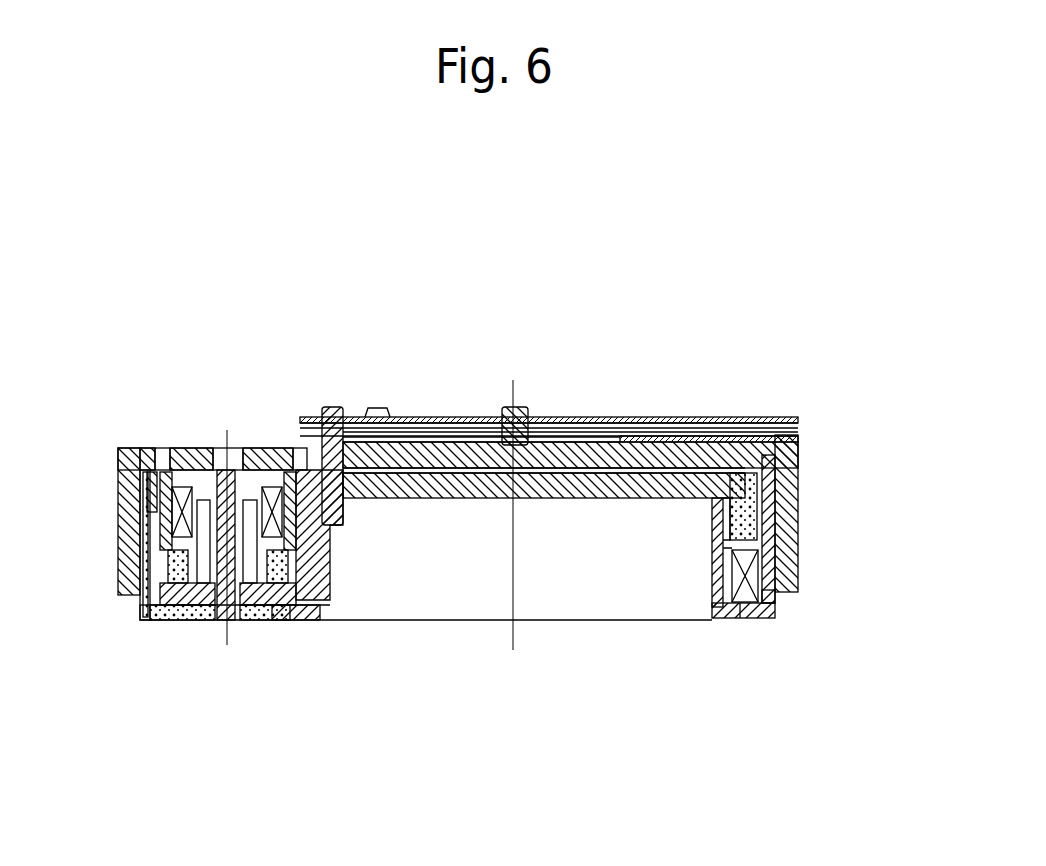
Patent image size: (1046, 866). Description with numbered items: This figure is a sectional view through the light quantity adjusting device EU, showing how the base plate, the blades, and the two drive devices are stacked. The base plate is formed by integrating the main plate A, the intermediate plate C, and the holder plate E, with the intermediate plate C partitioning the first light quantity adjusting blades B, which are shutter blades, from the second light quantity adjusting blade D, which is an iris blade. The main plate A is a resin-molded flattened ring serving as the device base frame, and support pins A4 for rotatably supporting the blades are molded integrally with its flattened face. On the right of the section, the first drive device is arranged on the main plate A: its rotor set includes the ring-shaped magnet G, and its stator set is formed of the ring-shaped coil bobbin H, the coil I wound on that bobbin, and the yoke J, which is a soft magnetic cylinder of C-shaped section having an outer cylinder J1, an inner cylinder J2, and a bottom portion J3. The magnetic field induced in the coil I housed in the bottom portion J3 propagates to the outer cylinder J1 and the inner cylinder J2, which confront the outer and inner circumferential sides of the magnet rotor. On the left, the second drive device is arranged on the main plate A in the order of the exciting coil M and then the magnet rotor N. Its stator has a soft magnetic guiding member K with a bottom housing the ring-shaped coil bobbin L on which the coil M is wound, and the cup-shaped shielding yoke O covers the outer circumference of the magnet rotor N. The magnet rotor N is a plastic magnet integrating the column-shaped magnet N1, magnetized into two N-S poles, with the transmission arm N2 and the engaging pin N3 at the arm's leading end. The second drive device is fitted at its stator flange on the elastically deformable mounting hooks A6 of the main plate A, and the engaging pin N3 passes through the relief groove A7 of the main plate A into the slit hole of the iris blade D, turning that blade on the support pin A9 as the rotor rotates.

The light quantity adjusting device EU is at (720, 347).
The main plate A is at (802, 465).
The first light quantity adjusting blades B is at (443, 420).
The intermediate plate C is at (803, 420).
The second light quantity adjusting blade D is at (570, 425).
The holder plate E is at (728, 417).
The magnet G is at (745, 512).
The coil bobbin H is at (745, 565).
The coil I is at (773, 573).
The yoke J is at (737, 622).
The outer cylinder J1 is at (777, 597).
The inner cylinder J2 is at (703, 603).
The bottom portion J3 is at (752, 620).
The guiding member K is at (183, 450).
The coil bobbin L is at (163, 543).
The coil M is at (118, 535).
The magnet rotor N is at (340, 552).
The magnet N1 is at (188, 625).
The transmission arm N2 is at (338, 585).
The engaging pin N3 is at (333, 407).
The shielding yoke O is at (143, 612).
The support pins A4 is at (522, 405).
The mounting hooks A6 is at (118, 480).
The relief groove A7 is at (293, 442).
The support pin A9 is at (380, 407).